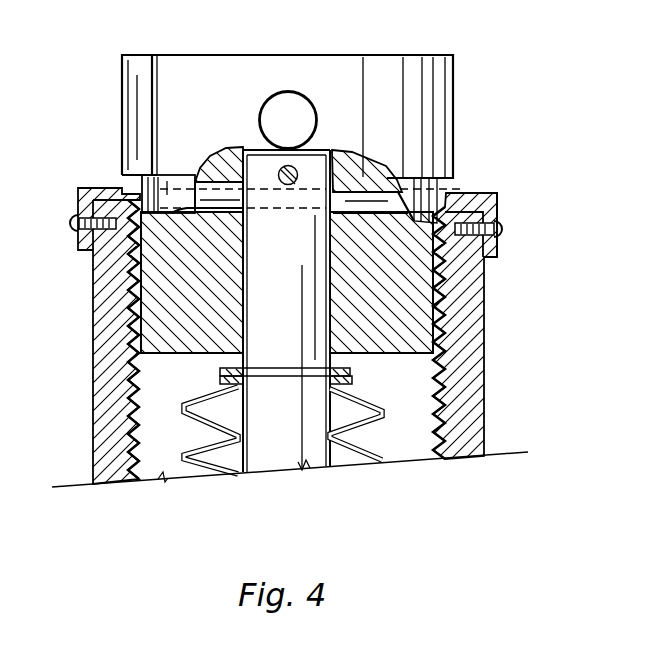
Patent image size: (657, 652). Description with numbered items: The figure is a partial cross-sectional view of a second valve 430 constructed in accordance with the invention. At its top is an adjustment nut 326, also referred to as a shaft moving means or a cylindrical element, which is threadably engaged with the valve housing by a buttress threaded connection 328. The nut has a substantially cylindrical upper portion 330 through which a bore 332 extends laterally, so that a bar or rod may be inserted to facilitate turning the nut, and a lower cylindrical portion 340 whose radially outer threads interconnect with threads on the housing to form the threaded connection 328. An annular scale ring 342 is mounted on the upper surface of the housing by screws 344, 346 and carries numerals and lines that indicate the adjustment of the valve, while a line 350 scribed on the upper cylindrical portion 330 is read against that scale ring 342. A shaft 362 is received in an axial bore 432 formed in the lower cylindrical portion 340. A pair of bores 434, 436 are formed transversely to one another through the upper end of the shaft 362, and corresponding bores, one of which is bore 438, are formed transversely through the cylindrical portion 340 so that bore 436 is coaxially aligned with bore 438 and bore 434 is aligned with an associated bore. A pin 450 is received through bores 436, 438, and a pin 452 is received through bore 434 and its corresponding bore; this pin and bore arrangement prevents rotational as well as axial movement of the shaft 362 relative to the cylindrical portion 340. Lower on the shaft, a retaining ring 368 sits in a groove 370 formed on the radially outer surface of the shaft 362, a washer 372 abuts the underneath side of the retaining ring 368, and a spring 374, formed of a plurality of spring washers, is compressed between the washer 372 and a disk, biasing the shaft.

The adjustment nut 326 is at (462, 126).
The buttress threaded connection 328 is at (438, 300).
The upper portion 330 is at (122, 90).
The bore 332 is at (296, 106).
The lower cylindrical portion 340 is at (449, 317).
The annular scale ring 342 is at (497, 204).
The screw 344 is at (68, 222).
The screw 346 is at (506, 230).
The line 350 is at (155, 106).
The shaft 362 is at (277, 455).
The retaining ring 368 is at (236, 377).
The groove 370 is at (285, 372).
The washer 372 is at (356, 381).
The spring 374 is at (184, 462).
The second valve 430 is at (508, 379).
The axial bore 432 is at (249, 312).
The bore 434 is at (288, 186).
The bore 436 is at (381, 282).
The bore 438 is at (192, 197).
The pin 450 is at (221, 194).
The pin 452 is at (285, 165).